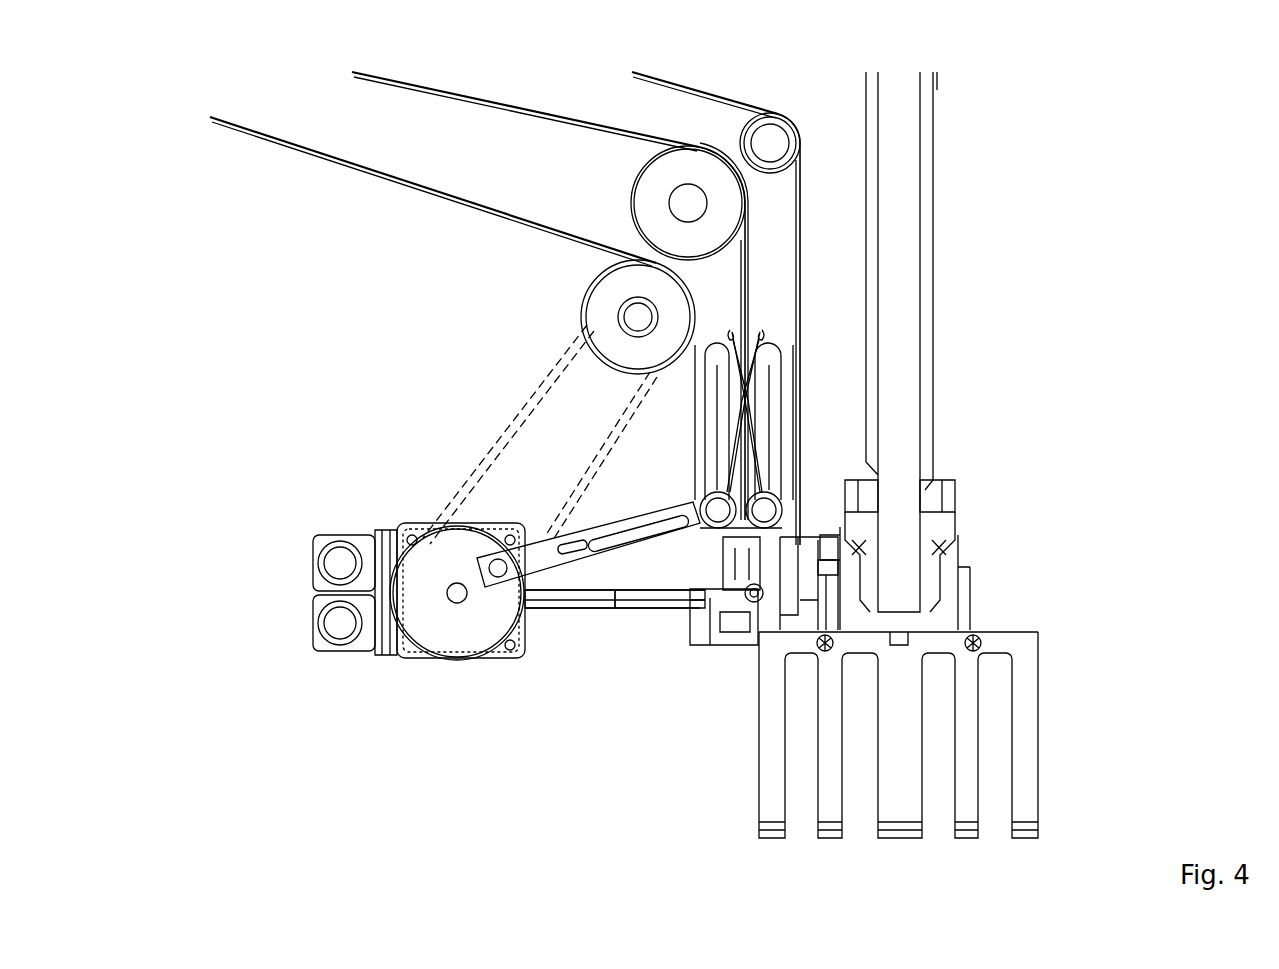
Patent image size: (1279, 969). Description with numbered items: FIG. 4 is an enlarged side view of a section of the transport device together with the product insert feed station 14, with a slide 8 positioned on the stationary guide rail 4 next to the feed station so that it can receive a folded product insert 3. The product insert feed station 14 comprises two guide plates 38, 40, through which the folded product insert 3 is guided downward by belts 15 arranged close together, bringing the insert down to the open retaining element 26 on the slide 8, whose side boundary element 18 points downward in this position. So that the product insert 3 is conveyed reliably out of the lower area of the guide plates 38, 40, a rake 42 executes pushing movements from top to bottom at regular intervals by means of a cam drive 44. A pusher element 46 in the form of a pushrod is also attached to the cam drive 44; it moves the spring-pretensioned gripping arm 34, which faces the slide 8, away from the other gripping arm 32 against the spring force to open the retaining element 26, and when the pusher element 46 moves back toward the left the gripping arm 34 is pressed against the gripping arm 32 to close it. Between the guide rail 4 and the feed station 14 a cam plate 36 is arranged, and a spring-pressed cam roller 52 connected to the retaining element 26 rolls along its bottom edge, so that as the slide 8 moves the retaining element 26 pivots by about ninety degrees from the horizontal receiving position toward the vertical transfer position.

The belts 15 is at (588, 125).
The guide plate 38 is at (733, 330).
The guide plate 40 is at (764, 335).
The guide rail 4 is at (897, 318).
The product insert 3 is at (740, 505).
The retaining element 26 is at (743, 560).
The cam plate 36 is at (787, 550).
The cam roller 52 is at (780, 612).
The slide 8 is at (1023, 647).
The side boundary element 18 is at (968, 782).
The rake 42 is at (657, 508).
The product insert feed station 14 is at (286, 654).
The cam drive 44 is at (435, 617).
The pusher element 46 is at (647, 598).
The gripping arm 32 is at (728, 560).
The gripping arm 34 is at (755, 572).